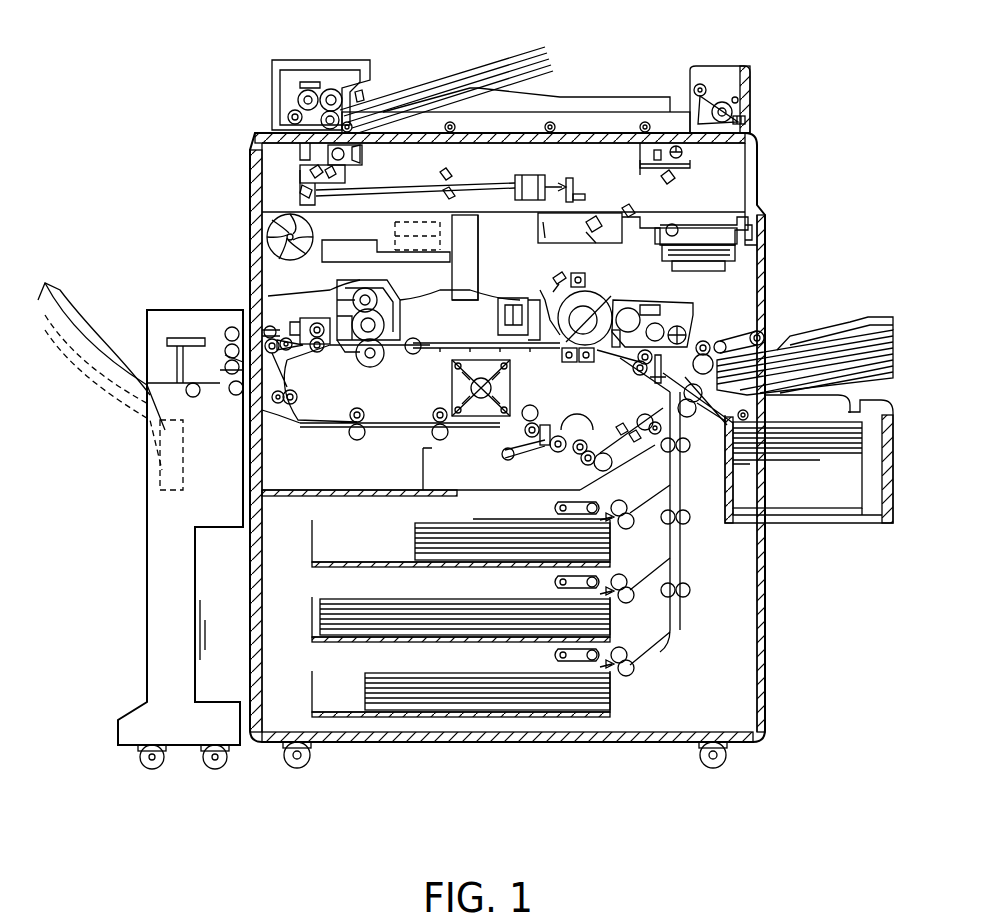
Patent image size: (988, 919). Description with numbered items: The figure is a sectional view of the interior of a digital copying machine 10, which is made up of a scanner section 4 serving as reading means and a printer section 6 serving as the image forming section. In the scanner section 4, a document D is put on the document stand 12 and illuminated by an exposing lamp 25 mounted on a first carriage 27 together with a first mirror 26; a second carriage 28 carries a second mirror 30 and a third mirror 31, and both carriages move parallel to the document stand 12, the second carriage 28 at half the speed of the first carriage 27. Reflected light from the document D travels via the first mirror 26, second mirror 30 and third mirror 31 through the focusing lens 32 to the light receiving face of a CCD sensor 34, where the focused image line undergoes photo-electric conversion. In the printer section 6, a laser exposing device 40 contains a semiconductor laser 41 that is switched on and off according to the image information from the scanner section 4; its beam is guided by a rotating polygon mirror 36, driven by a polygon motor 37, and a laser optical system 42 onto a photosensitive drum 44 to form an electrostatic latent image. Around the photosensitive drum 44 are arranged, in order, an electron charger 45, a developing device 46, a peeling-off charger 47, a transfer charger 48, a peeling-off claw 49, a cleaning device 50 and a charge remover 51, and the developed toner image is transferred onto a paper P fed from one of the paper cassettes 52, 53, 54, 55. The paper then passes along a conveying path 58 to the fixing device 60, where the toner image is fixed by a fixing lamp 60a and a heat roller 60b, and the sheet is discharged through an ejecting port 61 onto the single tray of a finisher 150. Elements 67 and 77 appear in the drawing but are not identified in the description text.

The digital copying machine 10 is at (838, 78).
The scanner section 4 is at (723, 167).
The printer section 6 is at (762, 299).
The document stand 12 is at (612, 130).
The exposing lamp 25 is at (357, 151).
The first mirror 26 is at (326, 181).
The first carriage 27 is at (303, 148).
The second carriage 28 is at (303, 174).
The second mirror 30 is at (303, 196).
The third mirror 31 is at (315, 190).
The focusing lens 32 is at (536, 178).
The CCD sensor 34 is at (576, 189).
The polygon mirror 36 is at (702, 226).
The polygon motor 37 is at (728, 256).
The laser exposing device 40 is at (741, 232).
The semiconductor laser 41 is at (674, 226).
The laser optical system 42 is at (570, 223).
The photosensitive drum 44 is at (607, 305).
The electron charger 45 is at (590, 290).
The developing device 46 is at (692, 296).
The peeling-off charger 47 is at (566, 363).
The transfer charger 48 is at (590, 366).
The peeling-off claw 49 is at (530, 334).
The cleaning device 50 is at (533, 303).
The charge remover 51 is at (558, 282).
The paper cassette 52 is at (326, 547).
The paper cassette 53 is at (326, 617).
The paper cassette 54 is at (326, 690).
The paper cassette 55 is at (838, 492).
The conveying path 58 is at (446, 342).
The fixing device 60 is at (380, 300).
The fixing lamp 60a is at (378, 352).
The heat roller 60b is at (346, 318).
The ejecting port 61 is at (248, 335).
The transfer belt 67 is at (422, 350).
The fan unit 77 is at (455, 401).
The finisher 150 is at (147, 331).
The document D is at (525, 56).
The paper P is at (868, 346).